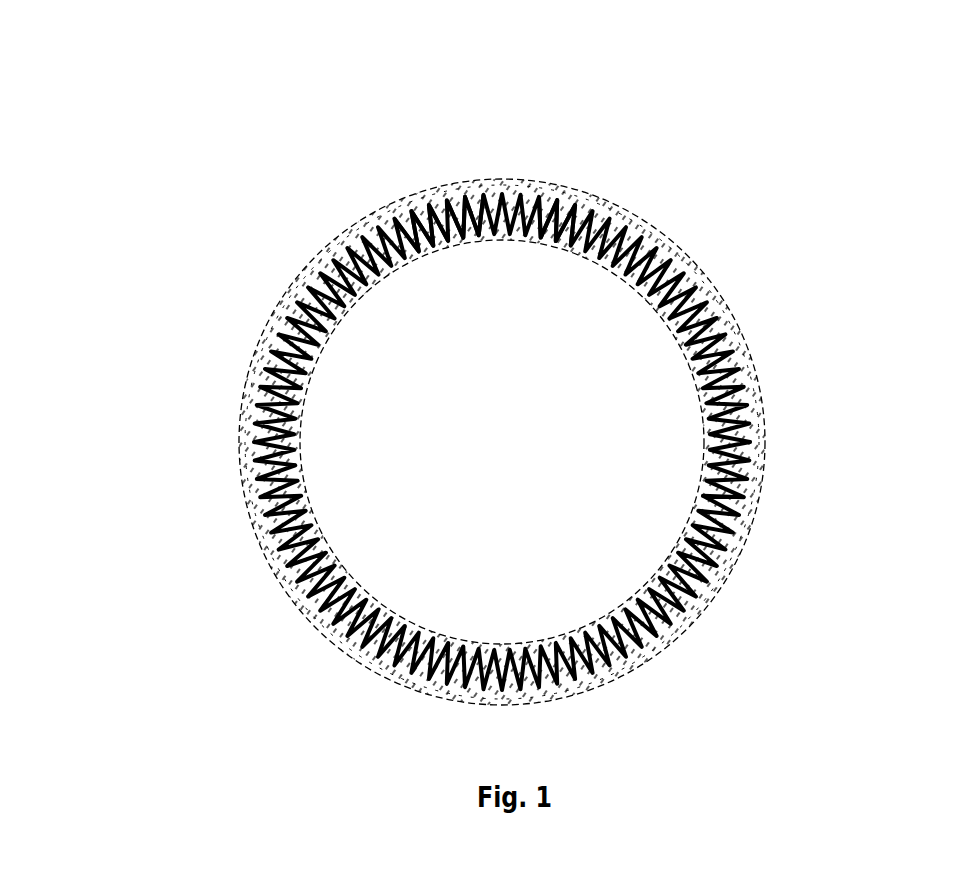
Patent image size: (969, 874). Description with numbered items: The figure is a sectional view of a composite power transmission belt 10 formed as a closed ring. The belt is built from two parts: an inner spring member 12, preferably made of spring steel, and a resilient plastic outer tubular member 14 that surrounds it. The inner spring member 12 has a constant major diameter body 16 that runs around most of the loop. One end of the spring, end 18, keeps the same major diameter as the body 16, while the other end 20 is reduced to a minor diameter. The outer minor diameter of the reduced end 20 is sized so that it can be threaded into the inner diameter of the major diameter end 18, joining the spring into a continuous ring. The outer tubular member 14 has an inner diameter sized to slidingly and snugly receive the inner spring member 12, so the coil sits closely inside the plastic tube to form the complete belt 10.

The composite power transmission belt 10 is at (473, 356).
The inner spring member 12 is at (250, 443).
The resilient plastic outer tubular member 14 is at (758, 470).
The constant major diameter body 16 is at (560, 210).
The major diameter end 18 is at (430, 215).
The reduced minor diameter end 20 is at (462, 200).